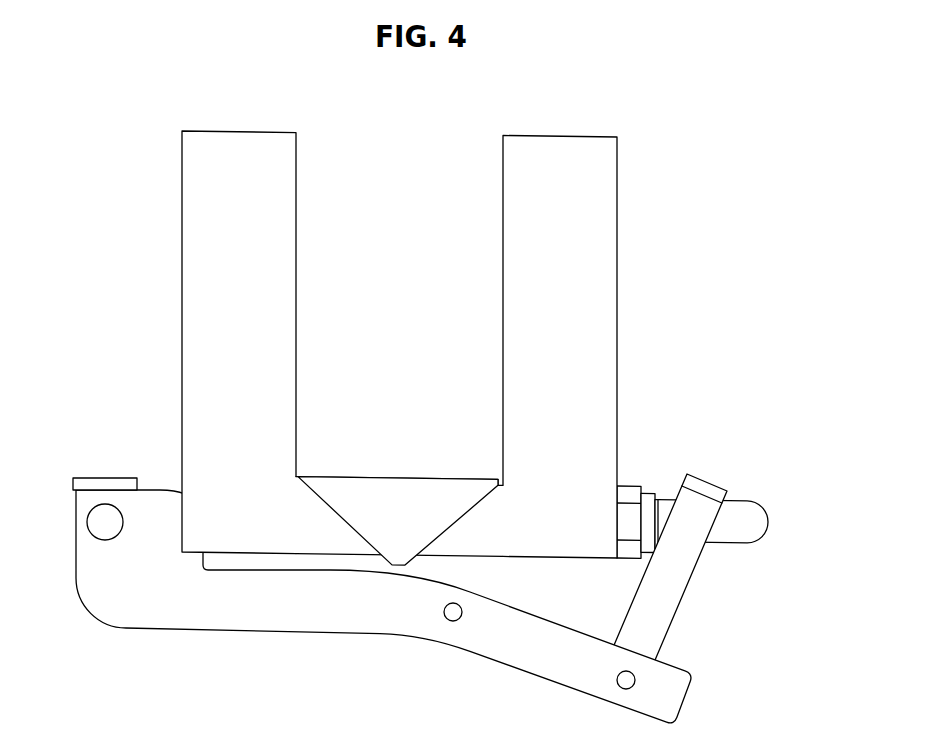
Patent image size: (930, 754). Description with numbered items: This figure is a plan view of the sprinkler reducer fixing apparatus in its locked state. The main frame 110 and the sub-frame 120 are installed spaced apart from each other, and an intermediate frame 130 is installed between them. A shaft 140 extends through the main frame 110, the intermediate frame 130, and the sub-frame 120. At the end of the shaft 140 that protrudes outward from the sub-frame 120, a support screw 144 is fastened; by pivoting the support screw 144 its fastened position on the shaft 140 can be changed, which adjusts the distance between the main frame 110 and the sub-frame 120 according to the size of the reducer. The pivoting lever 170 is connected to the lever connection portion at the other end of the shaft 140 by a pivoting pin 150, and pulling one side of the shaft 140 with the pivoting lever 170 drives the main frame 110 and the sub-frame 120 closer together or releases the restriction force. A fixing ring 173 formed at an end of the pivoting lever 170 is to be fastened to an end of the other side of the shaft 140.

The main frame 110 is at (196, 281).
The sub-frame 120 is at (600, 281).
The intermediate frame 130 is at (384, 493).
The shaft 140 is at (742, 533).
The support screw 144 is at (630, 483).
The pivoting pin 150 is at (105, 522).
The pivoting lever 170 is at (272, 623).
The fixing ring 173 is at (662, 615).